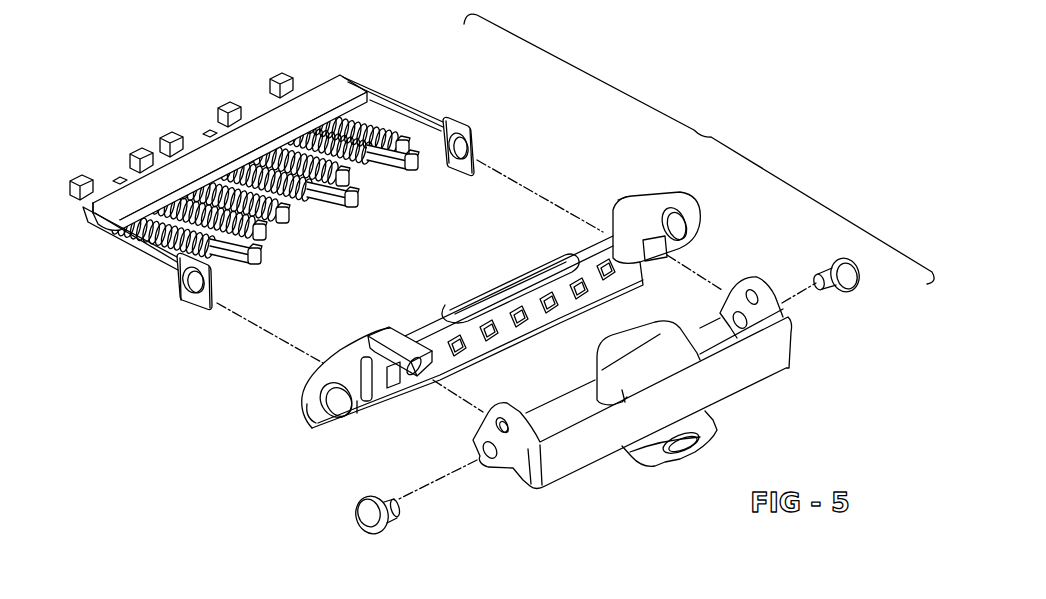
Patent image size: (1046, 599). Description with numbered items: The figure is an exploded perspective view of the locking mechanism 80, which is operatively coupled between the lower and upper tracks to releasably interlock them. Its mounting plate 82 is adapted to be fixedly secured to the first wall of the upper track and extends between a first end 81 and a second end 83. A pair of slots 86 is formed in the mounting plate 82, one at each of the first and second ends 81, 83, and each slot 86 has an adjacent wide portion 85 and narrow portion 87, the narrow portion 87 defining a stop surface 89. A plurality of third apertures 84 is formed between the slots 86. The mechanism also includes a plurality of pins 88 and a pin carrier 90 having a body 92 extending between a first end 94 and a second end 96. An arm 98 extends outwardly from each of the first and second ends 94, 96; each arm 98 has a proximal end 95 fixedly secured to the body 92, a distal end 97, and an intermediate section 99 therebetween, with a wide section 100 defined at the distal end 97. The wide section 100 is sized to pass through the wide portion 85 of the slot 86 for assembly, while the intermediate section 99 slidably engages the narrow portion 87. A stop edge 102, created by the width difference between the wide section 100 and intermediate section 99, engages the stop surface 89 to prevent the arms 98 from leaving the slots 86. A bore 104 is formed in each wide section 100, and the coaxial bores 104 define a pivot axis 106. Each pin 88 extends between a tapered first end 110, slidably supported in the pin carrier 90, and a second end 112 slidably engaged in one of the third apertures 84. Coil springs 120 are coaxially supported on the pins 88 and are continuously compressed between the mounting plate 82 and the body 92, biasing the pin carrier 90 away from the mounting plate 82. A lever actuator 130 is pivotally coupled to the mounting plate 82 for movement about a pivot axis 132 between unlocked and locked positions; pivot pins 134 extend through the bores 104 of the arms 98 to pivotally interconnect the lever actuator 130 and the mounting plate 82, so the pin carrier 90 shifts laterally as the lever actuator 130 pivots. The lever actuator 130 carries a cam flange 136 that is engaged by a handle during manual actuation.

The locking mechanism 80 is at (708, 138).
The first end 81 is at (690, 193).
The mounting plate 82 is at (512, 274).
The second end 83 is at (298, 410).
The third apertures 84 is at (520, 325).
The wide portion 85 is at (362, 373).
The slots 86 is at (630, 197).
The narrow portion 87 is at (387, 402).
The pins 88 is at (237, 106).
The stop surface 89 is at (373, 337).
The pin carrier 90 is at (338, 73).
The body 92 is at (218, 156).
The first end 94 is at (357, 78).
The proximal end 95 is at (83, 234).
The second end 96 is at (80, 210).
The distal end 97 is at (217, 281).
The arm 98 is at (130, 254).
The intermediate section 99 is at (416, 126).
The wide section 100 is at (200, 312).
The stop edge 102 is at (167, 263).
The bore 104 is at (193, 296).
The pivot axis 106 is at (797, 300).
The first end 110 is at (210, 136).
The second end 112 is at (347, 212).
The coil springs 120 is at (318, 115).
The lever actuator 130 is at (707, 418).
The pivot axis 132 is at (684, 232).
The pivot pins 134 is at (863, 285).
The cam flange 136 is at (647, 465).